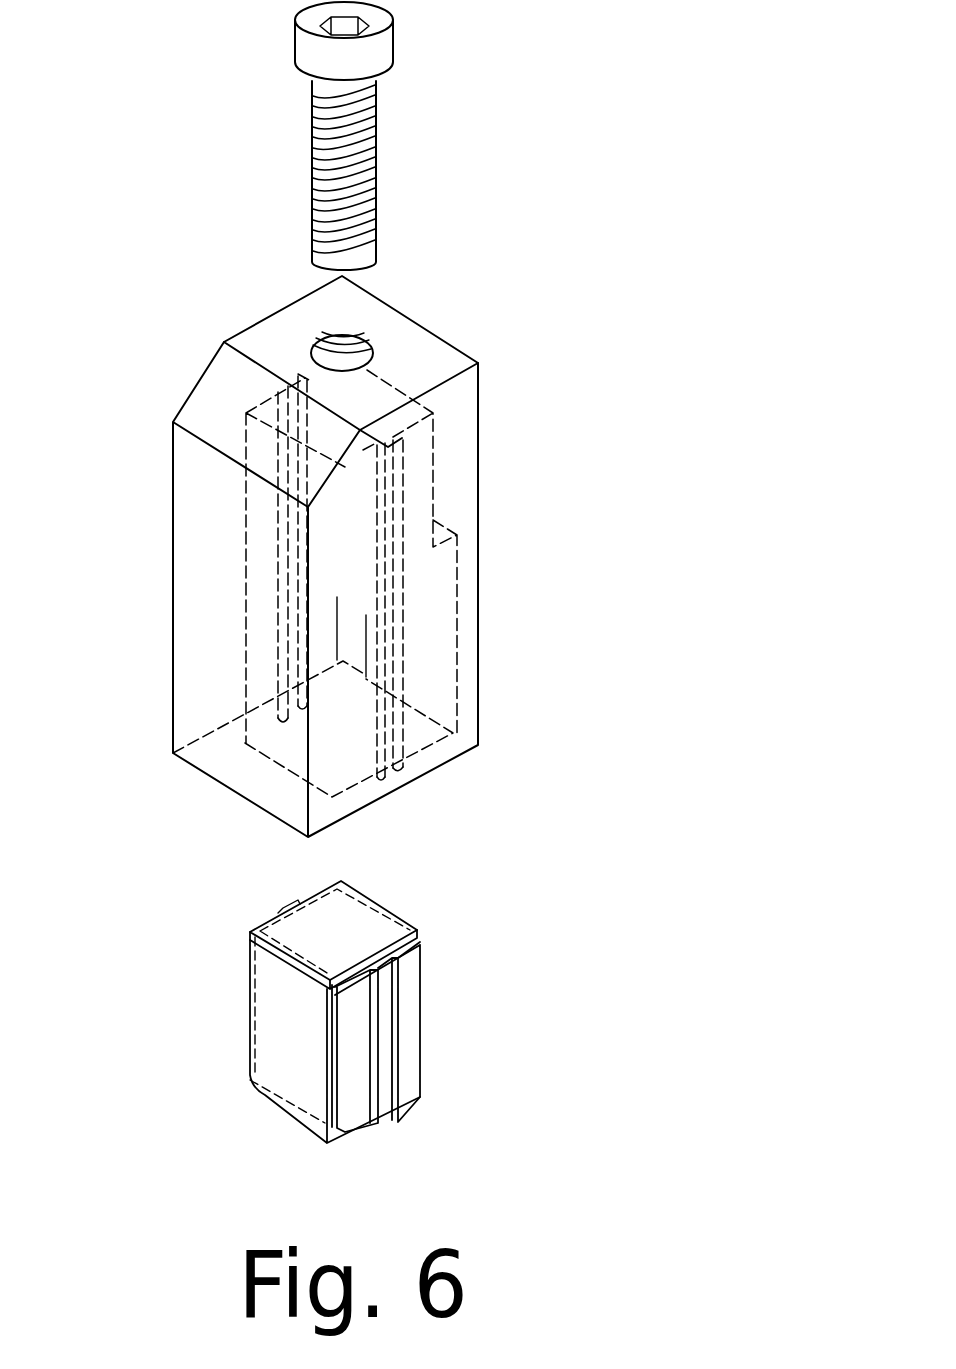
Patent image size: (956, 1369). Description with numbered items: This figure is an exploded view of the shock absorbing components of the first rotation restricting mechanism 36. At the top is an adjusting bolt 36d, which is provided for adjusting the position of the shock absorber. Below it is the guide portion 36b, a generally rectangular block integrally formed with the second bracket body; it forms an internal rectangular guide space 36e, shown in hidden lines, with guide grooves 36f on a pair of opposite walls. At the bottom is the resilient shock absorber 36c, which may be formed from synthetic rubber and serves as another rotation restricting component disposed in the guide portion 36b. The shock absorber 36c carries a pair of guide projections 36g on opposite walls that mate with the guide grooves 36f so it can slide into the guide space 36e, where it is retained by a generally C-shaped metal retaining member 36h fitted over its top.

The first rotation restricting mechanism 36 is at (374, 572).
The guide portion 36b is at (462, 432).
The resilient shock absorber 36c is at (441, 986).
The adjusting bolt 36d is at (343, 192).
The internal rectangular guide space 36e is at (267, 537).
The guide grooves 36f is at (393, 688).
The guide projections 36g is at (393, 1037).
The C-shaped metal retaining member 36h is at (332, 920).